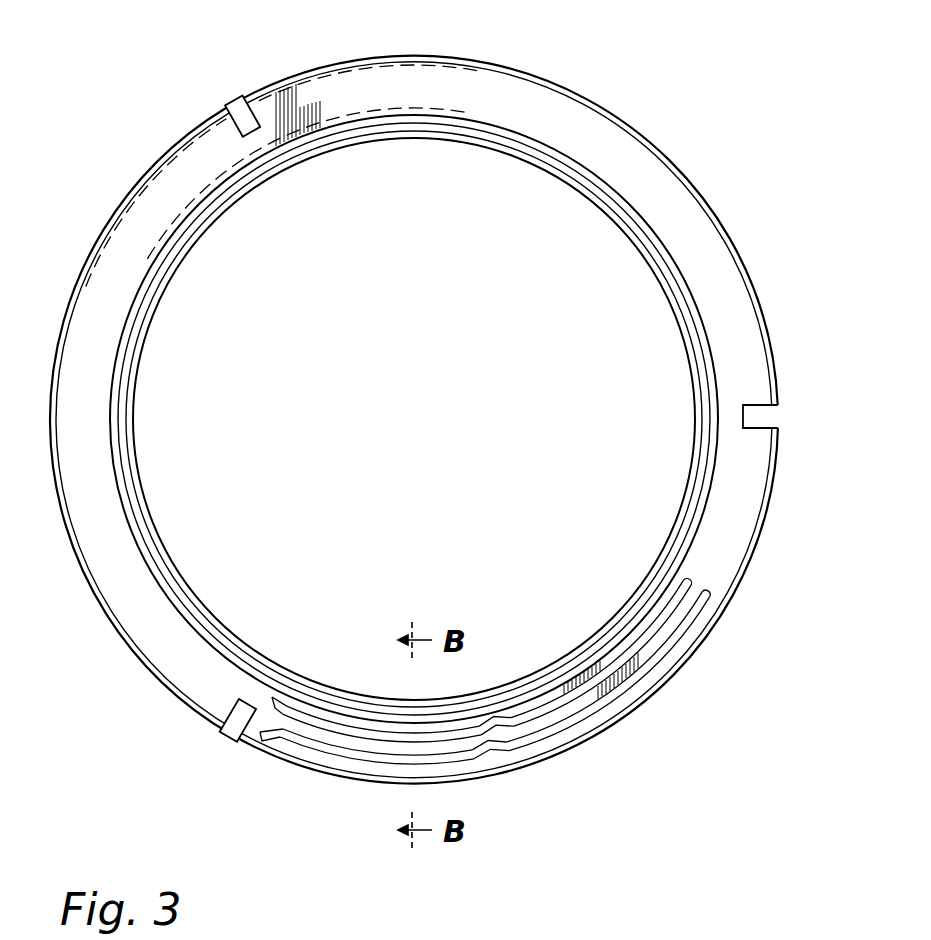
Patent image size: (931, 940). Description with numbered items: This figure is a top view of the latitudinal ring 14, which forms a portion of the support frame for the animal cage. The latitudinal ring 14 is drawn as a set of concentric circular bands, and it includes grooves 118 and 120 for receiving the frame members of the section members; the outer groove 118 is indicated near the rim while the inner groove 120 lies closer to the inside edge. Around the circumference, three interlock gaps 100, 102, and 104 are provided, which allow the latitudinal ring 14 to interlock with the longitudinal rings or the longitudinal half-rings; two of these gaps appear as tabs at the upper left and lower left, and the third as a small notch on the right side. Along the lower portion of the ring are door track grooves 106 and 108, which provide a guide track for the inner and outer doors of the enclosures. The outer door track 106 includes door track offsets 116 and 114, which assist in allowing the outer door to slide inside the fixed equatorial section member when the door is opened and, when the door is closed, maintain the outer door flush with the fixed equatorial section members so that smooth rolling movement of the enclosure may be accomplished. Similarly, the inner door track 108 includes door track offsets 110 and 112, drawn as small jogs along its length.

The latitudinal ring 14 is at (620, 108).
The interlock gap 100 is at (237, 101).
The interlock gap 102 is at (753, 418).
The interlock gap 104 is at (230, 716).
The door track groove 106 is at (324, 768).
The door track groove 108 is at (330, 728).
The door track offset 110 is at (498, 722).
The door track offset 112 is at (274, 694).
The door track offset 114 is at (508, 748).
The door track offset 116 is at (258, 738).
The groove 118 is at (338, 60).
The groove 120 is at (343, 122).